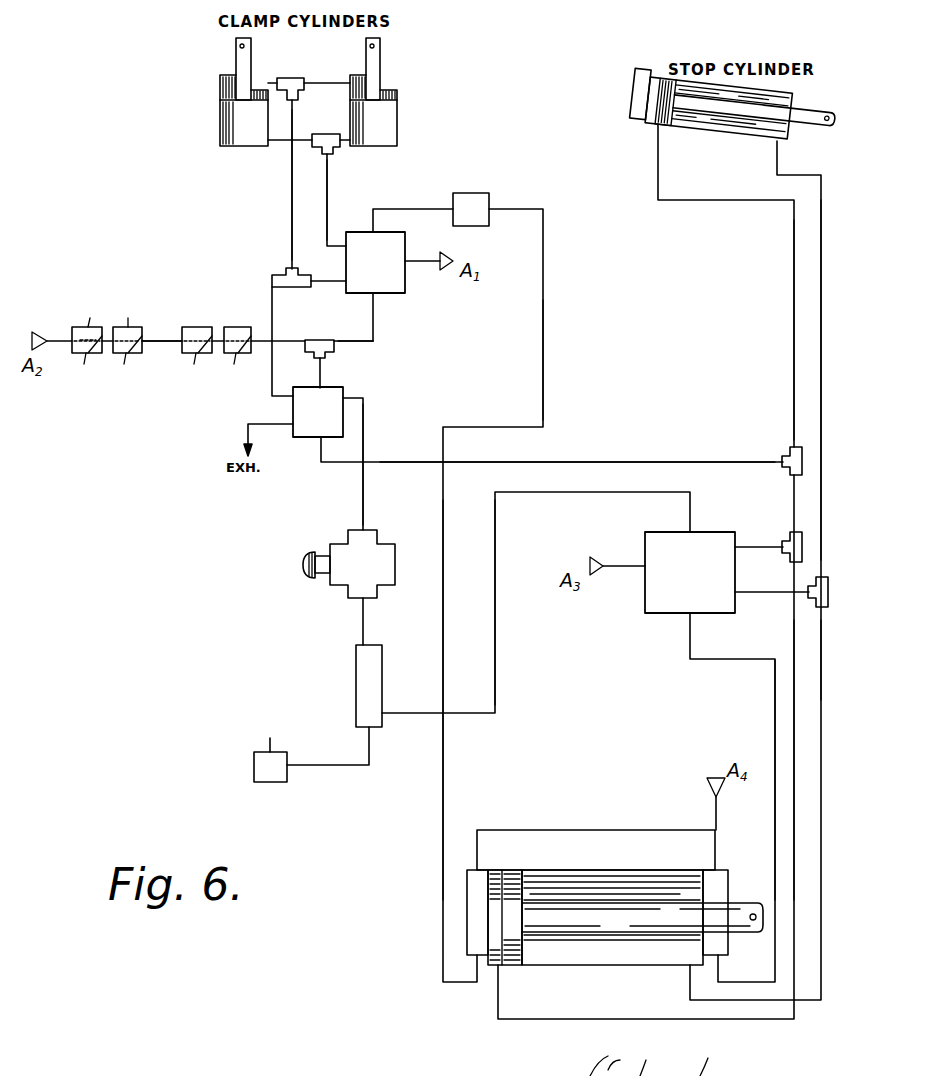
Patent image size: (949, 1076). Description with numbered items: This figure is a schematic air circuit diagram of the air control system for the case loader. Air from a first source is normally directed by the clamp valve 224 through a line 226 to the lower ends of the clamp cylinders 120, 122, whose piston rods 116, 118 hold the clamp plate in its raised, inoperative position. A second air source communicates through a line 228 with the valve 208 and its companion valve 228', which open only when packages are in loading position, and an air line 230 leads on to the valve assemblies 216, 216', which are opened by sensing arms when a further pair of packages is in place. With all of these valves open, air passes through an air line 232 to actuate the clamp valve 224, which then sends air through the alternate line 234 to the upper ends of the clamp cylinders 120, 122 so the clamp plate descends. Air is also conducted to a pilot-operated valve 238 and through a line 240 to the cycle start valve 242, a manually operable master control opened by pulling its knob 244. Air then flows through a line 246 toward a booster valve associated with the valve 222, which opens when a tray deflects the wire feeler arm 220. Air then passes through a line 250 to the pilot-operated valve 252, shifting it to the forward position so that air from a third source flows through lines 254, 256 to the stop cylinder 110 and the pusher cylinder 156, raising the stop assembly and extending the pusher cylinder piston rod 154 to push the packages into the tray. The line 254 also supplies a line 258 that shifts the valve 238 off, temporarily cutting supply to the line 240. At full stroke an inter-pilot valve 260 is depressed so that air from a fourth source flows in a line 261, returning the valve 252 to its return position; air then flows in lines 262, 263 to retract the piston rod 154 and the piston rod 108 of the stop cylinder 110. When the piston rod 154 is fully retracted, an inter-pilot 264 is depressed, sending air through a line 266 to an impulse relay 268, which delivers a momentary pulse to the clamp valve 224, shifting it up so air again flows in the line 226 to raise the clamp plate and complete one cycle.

The piston rod 108 is at (815, 120).
The stop cylinder 110 is at (728, 128).
The clamp cylinder piston rod 116 is at (236, 62).
The clamp cylinder piston rod 118 is at (380, 62).
The clamp cylinder 120 is at (220, 127).
The clamp cylinder 122 is at (390, 120).
The pusher cylinder piston rod 154 is at (745, 903).
The pusher cylinder 156 is at (628, 968).
The valve 208 is at (88, 327).
The valve assembly 216 is at (173, 319).
The valve assembly 216' is at (220, 319).
The wire feeler arm 220 is at (272, 742).
The valve 222 is at (254, 768).
The clamp valve 224 is at (405, 290).
The line 226 is at (328, 176).
The line 228 is at (62, 319).
The valve 228' is at (118, 309).
The air line 230 is at (165, 343).
The air line 232 is at (373, 348).
The alternate line 234 is at (292, 244).
The pilot-operated valve 238 is at (293, 408).
The line 240 is at (363, 422).
The cycle start valve 242 is at (380, 553).
The knob 244 is at (298, 570).
The line 246 is at (363, 612).
The line 250 is at (495, 673).
The pilot-operated valve 252 is at (648, 534).
The line 254 is at (794, 287).
The line 256 is at (794, 712).
The line 258 is at (610, 460).
The inter-pilot valve 260 is at (722, 950).
The line 261 is at (775, 690).
The line 262 is at (821, 637).
The line 263 is at (821, 330).
The inter-pilot 264 is at (467, 905).
The line 266 is at (545, 370).
The impulse relay 268 is at (487, 192).